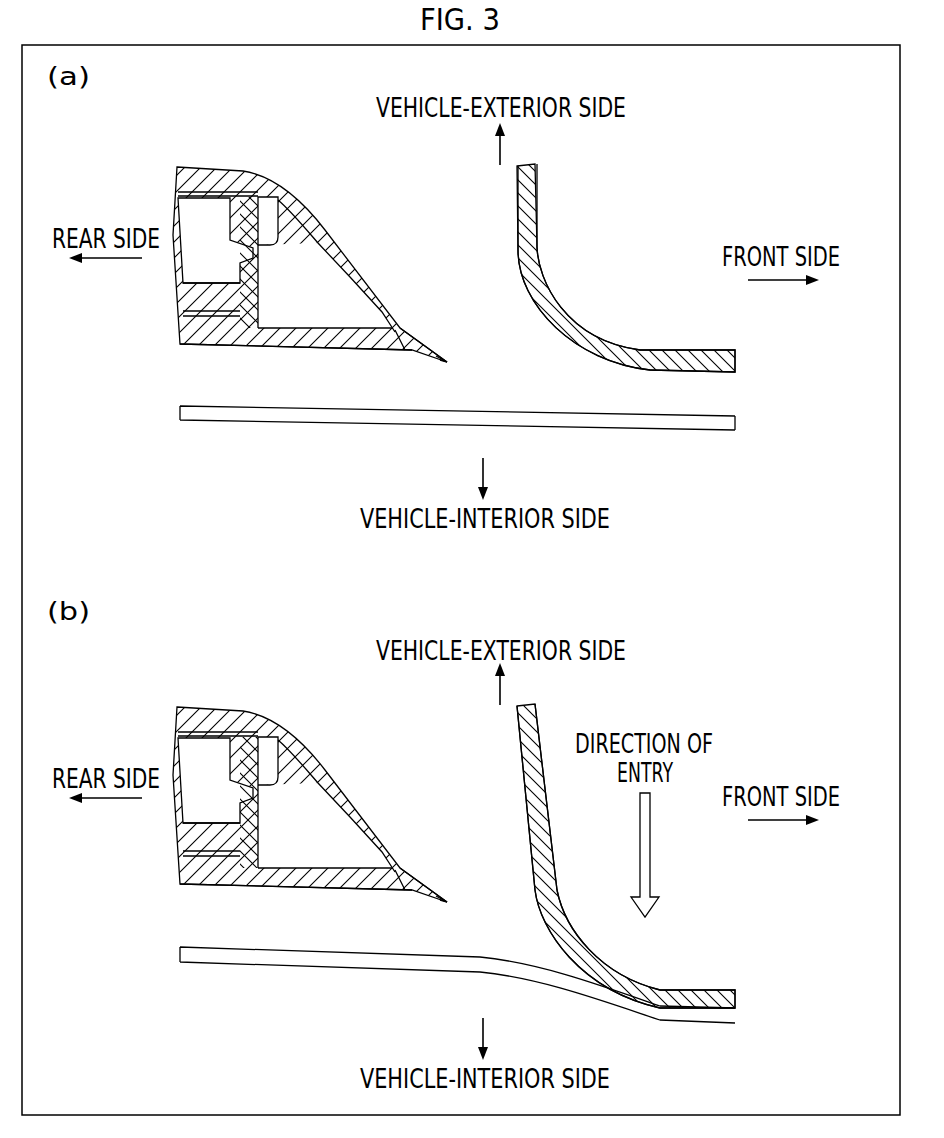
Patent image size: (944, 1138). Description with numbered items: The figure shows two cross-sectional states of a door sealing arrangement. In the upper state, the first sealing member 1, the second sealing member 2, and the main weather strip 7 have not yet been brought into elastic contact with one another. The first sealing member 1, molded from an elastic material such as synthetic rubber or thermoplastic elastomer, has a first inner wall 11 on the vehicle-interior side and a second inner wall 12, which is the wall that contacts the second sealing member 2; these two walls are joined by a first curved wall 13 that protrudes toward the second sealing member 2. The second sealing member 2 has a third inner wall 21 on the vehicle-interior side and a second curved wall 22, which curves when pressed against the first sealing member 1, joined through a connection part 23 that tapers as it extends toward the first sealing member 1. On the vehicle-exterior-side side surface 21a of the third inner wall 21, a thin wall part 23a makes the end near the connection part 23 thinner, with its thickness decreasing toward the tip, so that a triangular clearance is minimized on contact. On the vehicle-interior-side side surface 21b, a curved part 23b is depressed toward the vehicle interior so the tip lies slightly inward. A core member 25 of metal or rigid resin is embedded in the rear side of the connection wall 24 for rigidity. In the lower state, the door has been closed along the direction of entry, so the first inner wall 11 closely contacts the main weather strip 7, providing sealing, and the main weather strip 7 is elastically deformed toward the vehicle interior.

The first sealing member 1 is at (513, 196).
The first inner wall 11 is at (680, 351).
The second inner wall 12 is at (539, 212).
The first curved wall 13 is at (569, 318).
The second sealing member 2 is at (173, 182).
The third inner wall 21 is at (315, 350).
The vehicle-exterior-side side surface 21a is at (335, 328).
The vehicle-interior-side side surface 21b is at (346, 350).
The second curved wall 22 is at (345, 246).
The connection part 23 is at (407, 342).
The thin wall part 23a is at (407, 333).
The curved part 23b is at (432, 359).
The connection wall 24 is at (278, 222).
The core member 25 is at (206, 191).
The main weather strip 7 is at (215, 422).